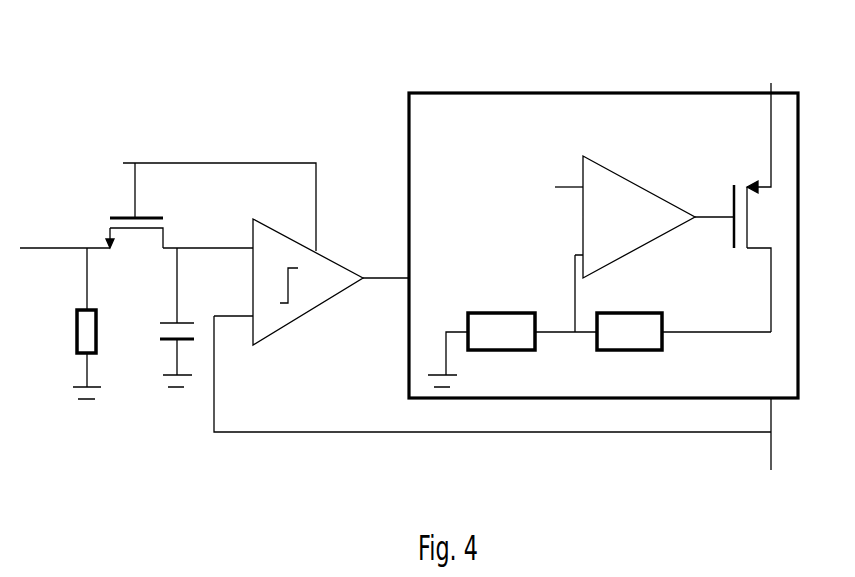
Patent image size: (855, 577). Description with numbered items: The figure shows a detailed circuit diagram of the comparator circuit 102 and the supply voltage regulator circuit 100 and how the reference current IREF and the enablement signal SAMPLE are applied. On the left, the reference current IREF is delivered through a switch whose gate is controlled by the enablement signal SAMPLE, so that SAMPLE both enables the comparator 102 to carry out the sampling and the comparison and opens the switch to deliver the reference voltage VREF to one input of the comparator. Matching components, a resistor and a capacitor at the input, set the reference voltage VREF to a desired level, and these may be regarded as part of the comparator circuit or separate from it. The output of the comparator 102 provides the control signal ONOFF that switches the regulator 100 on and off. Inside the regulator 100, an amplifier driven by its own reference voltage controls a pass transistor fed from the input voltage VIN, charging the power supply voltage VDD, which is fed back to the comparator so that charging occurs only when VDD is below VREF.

The supply voltage regulator circuit 100 is at (603, 245).
The comparator circuit 102 is at (253, 221).
The enablement signal SAMPLE is at (185, 200).
The reference current IREF is at (65, 310).
The reference voltage VREF is at (206, 304).
The comparator output signal ONOFF is at (386, 279).
The input voltage VIN is at (771, 72).
The power supply voltage VDD is at (768, 455).